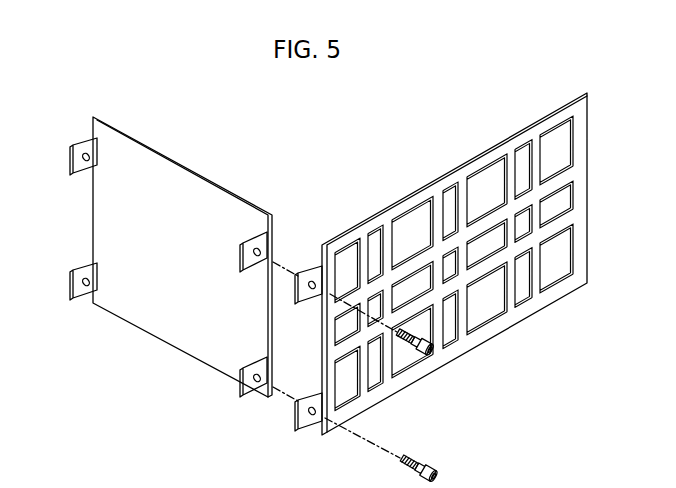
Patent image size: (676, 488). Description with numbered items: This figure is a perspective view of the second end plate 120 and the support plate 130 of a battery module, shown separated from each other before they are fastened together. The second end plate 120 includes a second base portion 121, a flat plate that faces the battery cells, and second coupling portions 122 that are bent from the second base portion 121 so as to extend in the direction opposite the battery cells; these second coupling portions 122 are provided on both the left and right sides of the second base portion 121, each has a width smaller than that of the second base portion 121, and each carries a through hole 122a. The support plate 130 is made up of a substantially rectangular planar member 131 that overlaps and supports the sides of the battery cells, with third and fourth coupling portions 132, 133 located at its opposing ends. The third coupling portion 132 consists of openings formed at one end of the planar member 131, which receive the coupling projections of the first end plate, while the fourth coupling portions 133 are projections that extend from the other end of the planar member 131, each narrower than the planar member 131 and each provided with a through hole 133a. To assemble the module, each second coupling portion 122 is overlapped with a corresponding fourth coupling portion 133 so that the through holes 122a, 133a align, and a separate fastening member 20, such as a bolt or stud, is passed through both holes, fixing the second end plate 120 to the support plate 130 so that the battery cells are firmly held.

The fastening member 20 is at (430, 466).
The second end plate 120 is at (145, 285).
The second base portion 121 is at (150, 320).
The second coupling portion 122 is at (72, 268).
The through hole 122a is at (88, 287).
The support plate 130 is at (457, 287).
The planar member 131 is at (480, 335).
The third coupling portion 132 is at (548, 150).
The fourth coupling portion 133 is at (305, 428).
The through hole 133a is at (313, 416).